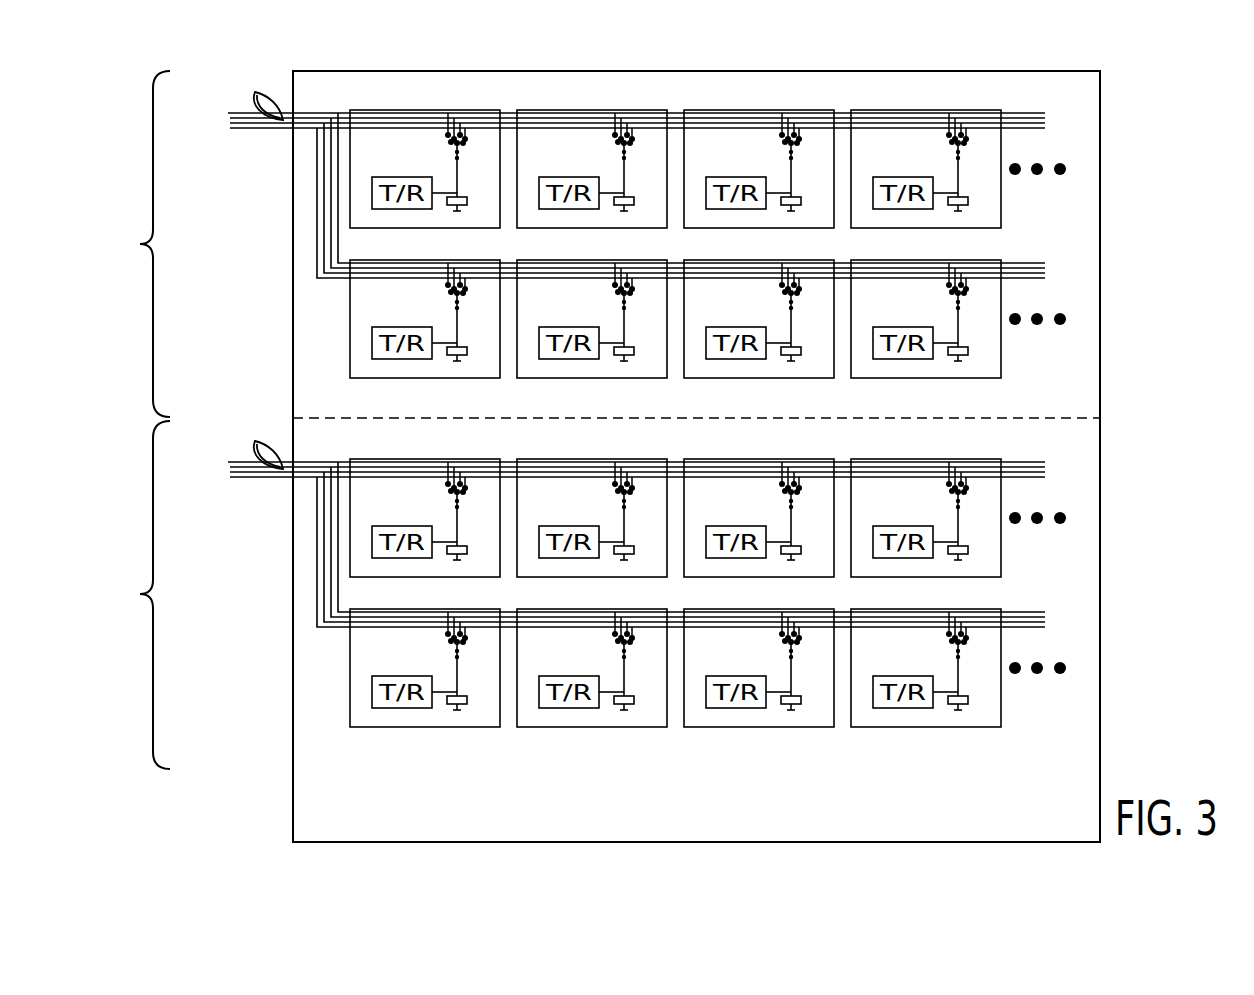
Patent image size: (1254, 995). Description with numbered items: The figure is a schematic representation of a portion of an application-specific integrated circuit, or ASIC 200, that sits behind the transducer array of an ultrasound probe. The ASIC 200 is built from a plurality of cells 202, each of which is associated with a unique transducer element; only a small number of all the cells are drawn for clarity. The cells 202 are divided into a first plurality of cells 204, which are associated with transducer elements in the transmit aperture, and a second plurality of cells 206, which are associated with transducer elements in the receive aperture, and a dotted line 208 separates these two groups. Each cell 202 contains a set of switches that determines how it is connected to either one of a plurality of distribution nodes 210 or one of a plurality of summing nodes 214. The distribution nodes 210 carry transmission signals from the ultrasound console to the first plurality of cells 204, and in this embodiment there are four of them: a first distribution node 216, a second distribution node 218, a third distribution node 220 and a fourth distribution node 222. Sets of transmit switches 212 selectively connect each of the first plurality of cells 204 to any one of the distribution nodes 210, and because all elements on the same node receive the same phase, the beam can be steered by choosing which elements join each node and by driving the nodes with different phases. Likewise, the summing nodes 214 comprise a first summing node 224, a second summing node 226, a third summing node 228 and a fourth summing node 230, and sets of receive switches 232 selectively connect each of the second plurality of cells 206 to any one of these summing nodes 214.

The application-specific integrated circuit 200 is at (1126, 106).
The cells 202 is at (990, 207).
The first plurality of cells 204 is at (133, 244).
The second plurality of cells 206 is at (133, 595).
The dotted line 208 is at (1078, 417).
The distribution nodes 210 is at (259, 94).
The sets of transmit switches 212 is at (726, 188).
The summing nodes 214 is at (259, 443).
The first distribution node 216 is at (230, 113).
The second distribution node 218 is at (232, 118).
The third distribution node 220 is at (232, 123).
The fourth distribution node 222 is at (232, 128).
The first summing node 224 is at (230, 462).
The second summing node 226 is at (232, 467).
The third summing node 228 is at (232, 472).
The fourth summing node 230 is at (232, 477).
The sets of receive switches 232 is at (726, 537).